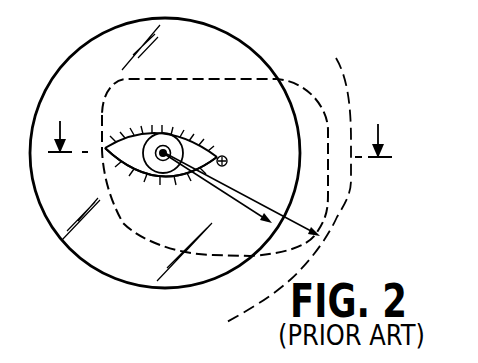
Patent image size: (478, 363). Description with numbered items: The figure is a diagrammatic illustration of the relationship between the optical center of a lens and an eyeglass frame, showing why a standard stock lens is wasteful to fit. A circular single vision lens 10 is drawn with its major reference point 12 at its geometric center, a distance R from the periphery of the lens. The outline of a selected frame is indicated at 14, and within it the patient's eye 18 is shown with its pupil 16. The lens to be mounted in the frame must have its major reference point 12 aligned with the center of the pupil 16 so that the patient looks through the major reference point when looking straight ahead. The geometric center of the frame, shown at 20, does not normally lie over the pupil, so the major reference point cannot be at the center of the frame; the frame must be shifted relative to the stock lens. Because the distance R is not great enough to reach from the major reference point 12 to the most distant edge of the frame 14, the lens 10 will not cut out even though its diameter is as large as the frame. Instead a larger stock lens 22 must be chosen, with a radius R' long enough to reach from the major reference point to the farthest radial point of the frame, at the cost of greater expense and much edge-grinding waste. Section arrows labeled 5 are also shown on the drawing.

The circular single vision lens 10 is at (70, 60).
The major reference point 12 is at (153, 166).
The outline of a selected frame 14 is at (302, 88).
The pupil 16 is at (162, 175).
The patient's eye 18 is at (118, 162).
The geometric center of the frame 20 is at (227, 157).
The larger stock lens 22 is at (351, 89).
The section line 5- 5 is at (220, 125).
The distance from major reference point to lens periphery R is at (217, 199).
The radius of the larger stock lens R' is at (241, 194).